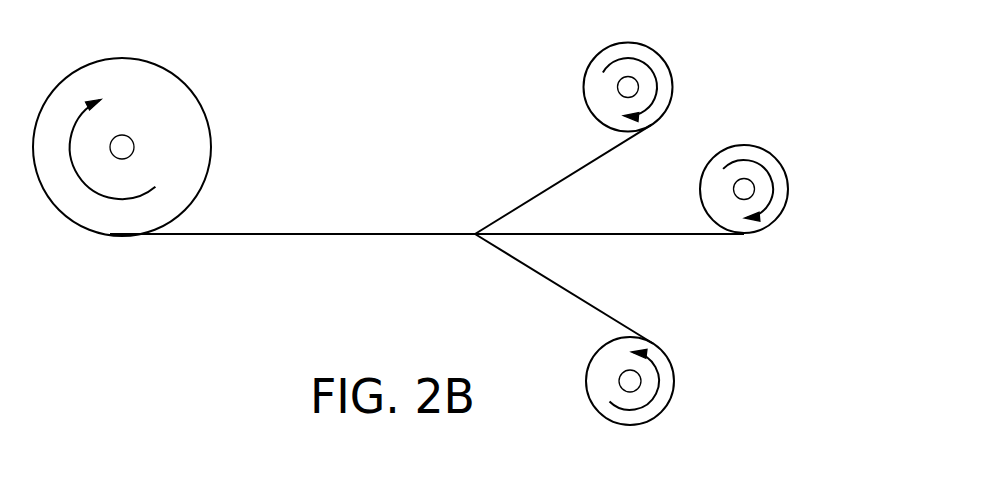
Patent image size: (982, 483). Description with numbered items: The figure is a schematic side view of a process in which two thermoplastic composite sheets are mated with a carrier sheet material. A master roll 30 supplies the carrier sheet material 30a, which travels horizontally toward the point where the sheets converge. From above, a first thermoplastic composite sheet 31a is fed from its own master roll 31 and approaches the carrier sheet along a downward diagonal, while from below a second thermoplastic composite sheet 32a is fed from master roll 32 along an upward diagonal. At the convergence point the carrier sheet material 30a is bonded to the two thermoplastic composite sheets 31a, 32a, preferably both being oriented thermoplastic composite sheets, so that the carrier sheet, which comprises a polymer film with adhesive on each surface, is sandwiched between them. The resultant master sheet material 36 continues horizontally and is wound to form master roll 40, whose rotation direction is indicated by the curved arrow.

The master roll 40 is at (217, 115).
The master sheet material 36 is at (358, 227).
The master roll 31 is at (682, 72).
The thermoplastic composite sheet 31a is at (533, 178).
The master roll 30 is at (770, 145).
The carrier sheet material 30a is at (598, 233).
The master roll 32 is at (687, 372).
The thermoplastic composite sheet 32a is at (510, 275).